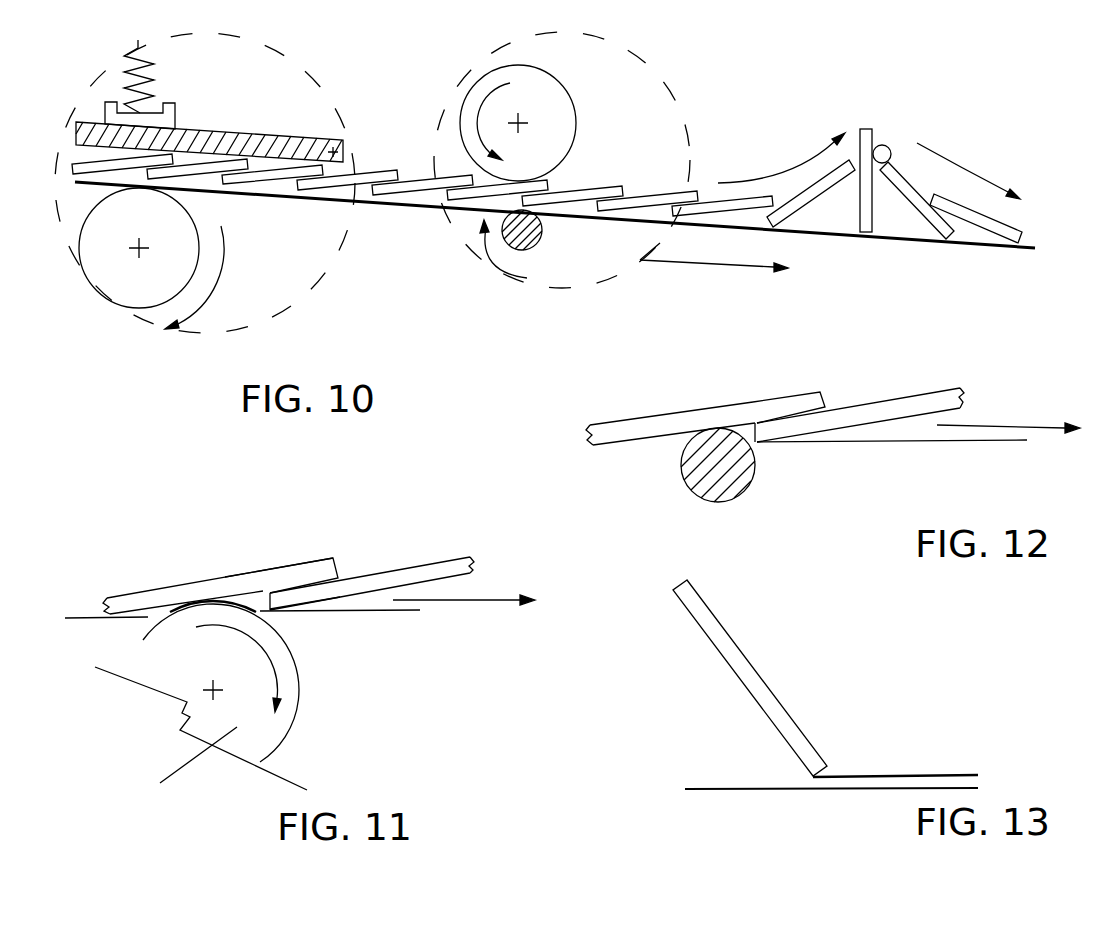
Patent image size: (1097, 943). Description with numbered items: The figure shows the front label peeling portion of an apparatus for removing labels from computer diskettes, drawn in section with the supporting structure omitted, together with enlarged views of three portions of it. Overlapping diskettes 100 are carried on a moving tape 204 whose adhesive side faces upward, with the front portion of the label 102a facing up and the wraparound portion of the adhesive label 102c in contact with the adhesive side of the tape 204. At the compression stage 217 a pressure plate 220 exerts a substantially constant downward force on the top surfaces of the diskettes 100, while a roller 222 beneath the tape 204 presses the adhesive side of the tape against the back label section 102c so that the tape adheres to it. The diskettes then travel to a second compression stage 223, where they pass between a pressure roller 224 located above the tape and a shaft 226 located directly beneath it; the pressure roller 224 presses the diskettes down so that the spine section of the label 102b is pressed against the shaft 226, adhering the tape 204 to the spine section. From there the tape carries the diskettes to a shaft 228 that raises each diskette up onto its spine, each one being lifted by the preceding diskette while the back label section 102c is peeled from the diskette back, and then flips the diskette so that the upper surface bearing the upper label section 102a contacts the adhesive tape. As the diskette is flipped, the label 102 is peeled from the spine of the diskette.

In FIG. 11, the diskette 100 is at (282, 578).
In FIG. 12, the diskette 100 is at (807, 402).
In FIG. 13, the diskette 100 is at (732, 648).
In FIG. 13, the label 102 is at (882, 776).
In FIG. 11, the front portion of the label 102a is at (150, 588).
In FIG. 12, the front portion of the label 102a is at (632, 420).
In FIG. 11, the spine section of the label 102b is at (262, 595).
In FIG. 12, the spine section of the label 102b is at (753, 432).
In FIG. 11, the wraparound portion of the adhesive label 102c is at (303, 607).
In FIG. 12, the wraparound portion of the adhesive label 102c is at (790, 440).
In FIG. 10, the tape 204 is at (285, 197).
In FIG. 11, the tape 204 is at (397, 609).
In FIG. 12, the tape 204 is at (908, 442).
In FIG. 13, the tape 204 is at (718, 787).
In FIG. 10, the compression stage 217 is at (346, 122).
In FIG. 10, the pressure plate 220 is at (200, 142).
In FIG. 10, the roller 222 is at (135, 287).
In FIG. 11, the roller 222 is at (160, 785).
In FIG. 10, the second compression stage 223 is at (688, 118).
In FIG. 10, the pressure roller 224 is at (545, 108).
In FIG. 10, the shaft 226 is at (530, 238).
In FIG. 10, the shaft 228 is at (887, 146).